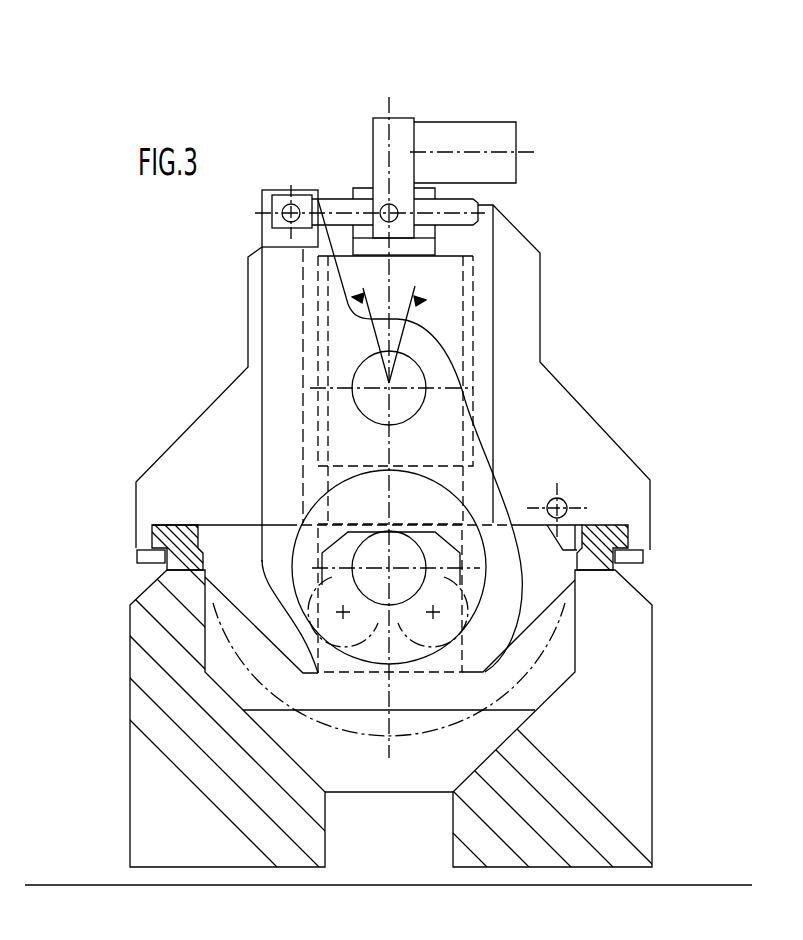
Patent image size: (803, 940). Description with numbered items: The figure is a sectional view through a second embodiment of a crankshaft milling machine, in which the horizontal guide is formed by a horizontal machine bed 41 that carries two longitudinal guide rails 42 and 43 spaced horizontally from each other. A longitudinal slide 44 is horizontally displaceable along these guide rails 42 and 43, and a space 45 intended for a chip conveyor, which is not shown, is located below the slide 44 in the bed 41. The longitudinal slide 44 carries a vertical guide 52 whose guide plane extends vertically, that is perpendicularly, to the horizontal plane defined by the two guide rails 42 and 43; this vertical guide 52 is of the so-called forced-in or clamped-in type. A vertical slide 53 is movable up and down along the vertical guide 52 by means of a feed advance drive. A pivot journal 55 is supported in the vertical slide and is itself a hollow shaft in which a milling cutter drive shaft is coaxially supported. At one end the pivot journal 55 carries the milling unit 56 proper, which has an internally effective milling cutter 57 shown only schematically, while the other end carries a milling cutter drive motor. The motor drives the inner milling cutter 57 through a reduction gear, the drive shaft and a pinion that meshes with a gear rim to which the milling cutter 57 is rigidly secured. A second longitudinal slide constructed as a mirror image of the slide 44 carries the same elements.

The horizontal bed 41 is at (635, 777).
The longitudinal guide rail 42 is at (162, 570).
The longitudinal guide rail 43 is at (622, 572).
The longitudinal slide 44 is at (578, 424).
The space for chip conveyor 45 is at (377, 855).
The vertical guide 52 is at (488, 321).
The vertical slide 53 is at (453, 334).
The pivot journal 55 is at (370, 376).
The milling unit 56 is at (270, 496).
The milling cutter 57 is at (475, 553).